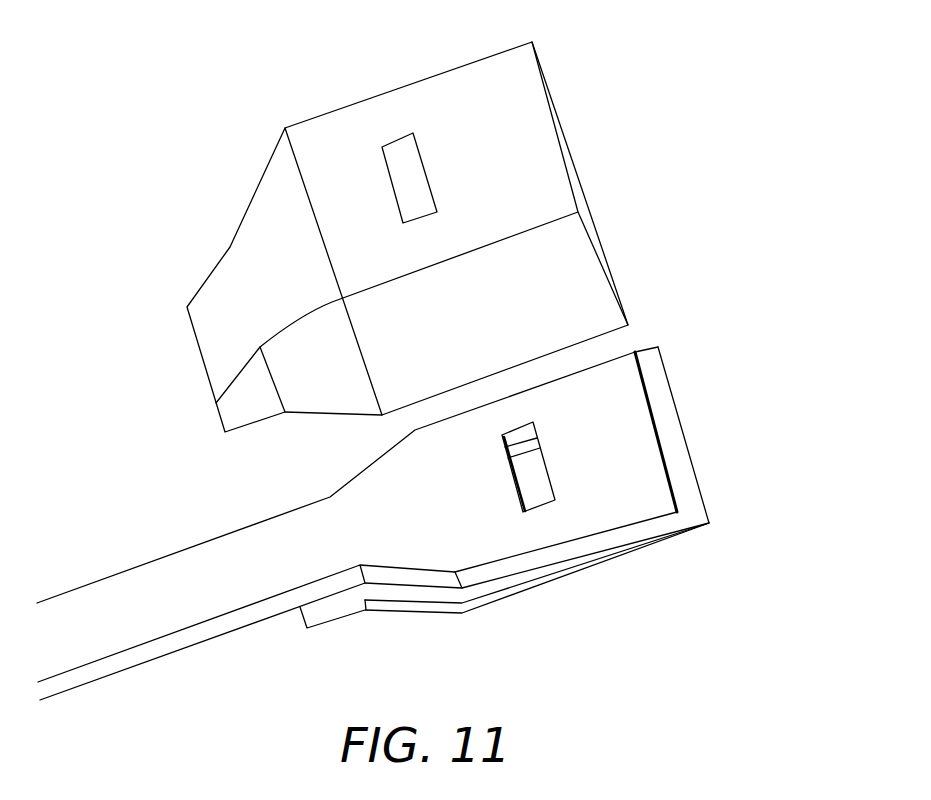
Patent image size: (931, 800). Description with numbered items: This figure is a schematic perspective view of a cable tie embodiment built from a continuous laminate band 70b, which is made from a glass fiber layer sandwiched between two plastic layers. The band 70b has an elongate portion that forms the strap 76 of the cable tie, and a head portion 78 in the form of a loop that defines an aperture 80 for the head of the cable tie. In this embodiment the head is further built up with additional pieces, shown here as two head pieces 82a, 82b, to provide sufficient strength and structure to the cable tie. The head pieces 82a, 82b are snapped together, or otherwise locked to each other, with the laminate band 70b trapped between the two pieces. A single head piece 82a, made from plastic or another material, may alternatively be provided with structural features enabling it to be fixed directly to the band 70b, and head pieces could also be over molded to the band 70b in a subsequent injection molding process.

The continuous laminate band 70b is at (175, 567).
The strap 76 is at (215, 630).
The head portion 78 is at (640, 348).
The aperture 80 is at (532, 482).
The head piece 82a is at (577, 176).
The head piece 82b is at (700, 492).